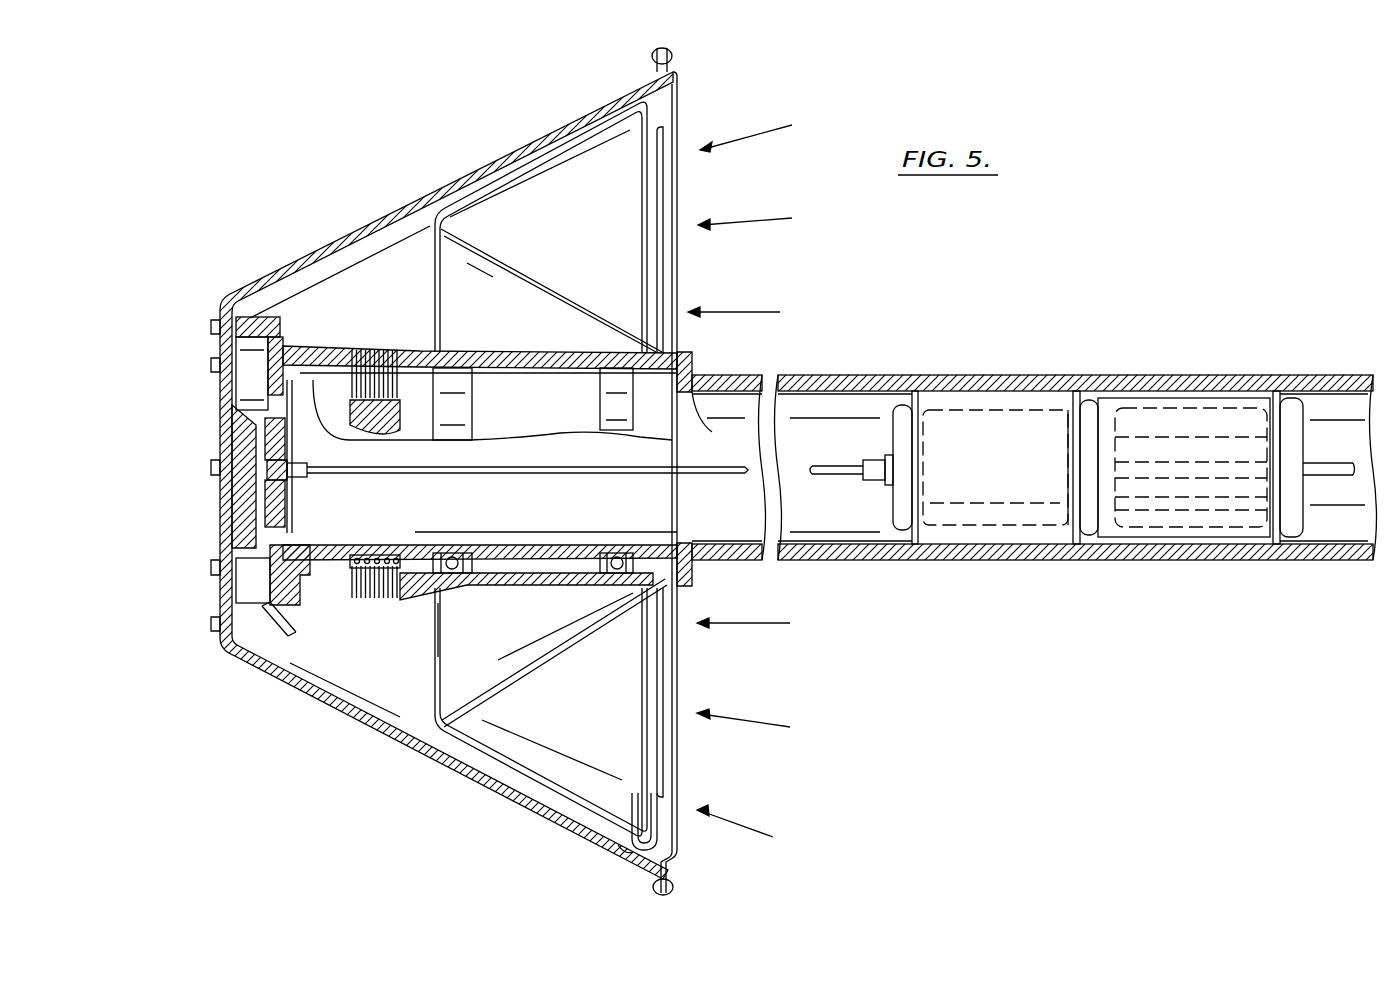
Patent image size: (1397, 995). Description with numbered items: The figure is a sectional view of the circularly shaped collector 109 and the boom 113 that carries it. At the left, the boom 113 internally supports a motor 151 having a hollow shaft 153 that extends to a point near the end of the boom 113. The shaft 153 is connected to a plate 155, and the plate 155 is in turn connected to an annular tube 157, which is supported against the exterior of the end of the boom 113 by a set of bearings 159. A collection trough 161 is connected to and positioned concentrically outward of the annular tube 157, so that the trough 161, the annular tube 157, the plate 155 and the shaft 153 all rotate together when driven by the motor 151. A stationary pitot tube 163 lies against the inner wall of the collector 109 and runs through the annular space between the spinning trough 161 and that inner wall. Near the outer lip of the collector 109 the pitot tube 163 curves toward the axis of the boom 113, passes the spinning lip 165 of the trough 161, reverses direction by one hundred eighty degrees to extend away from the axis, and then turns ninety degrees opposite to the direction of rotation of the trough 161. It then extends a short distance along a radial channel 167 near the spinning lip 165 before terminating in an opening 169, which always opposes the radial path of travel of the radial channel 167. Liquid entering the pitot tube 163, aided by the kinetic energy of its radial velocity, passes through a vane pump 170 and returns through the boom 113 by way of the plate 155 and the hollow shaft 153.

The circularly shaped collector 109 is at (428, 183).
The boom 113 is at (1158, 375).
The motor 151 is at (1017, 532).
The hollow shaft 153 is at (827, 477).
The plate 155 is at (255, 440).
The annular tube 157 is at (417, 350).
The set of bearings 159 is at (613, 553).
The collection trough 161 is at (630, 613).
The pitot tube 163 is at (353, 698).
The spinning lip 165 is at (647, 817).
The radial channel 167 is at (675, 857).
The opening 169 is at (613, 850).
The vane pump 170 is at (243, 395).